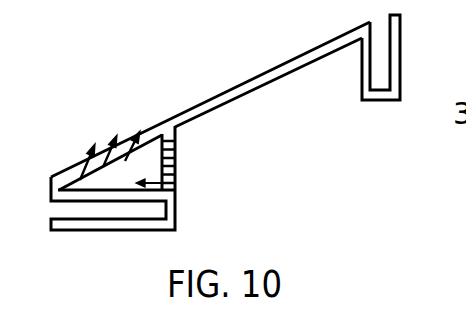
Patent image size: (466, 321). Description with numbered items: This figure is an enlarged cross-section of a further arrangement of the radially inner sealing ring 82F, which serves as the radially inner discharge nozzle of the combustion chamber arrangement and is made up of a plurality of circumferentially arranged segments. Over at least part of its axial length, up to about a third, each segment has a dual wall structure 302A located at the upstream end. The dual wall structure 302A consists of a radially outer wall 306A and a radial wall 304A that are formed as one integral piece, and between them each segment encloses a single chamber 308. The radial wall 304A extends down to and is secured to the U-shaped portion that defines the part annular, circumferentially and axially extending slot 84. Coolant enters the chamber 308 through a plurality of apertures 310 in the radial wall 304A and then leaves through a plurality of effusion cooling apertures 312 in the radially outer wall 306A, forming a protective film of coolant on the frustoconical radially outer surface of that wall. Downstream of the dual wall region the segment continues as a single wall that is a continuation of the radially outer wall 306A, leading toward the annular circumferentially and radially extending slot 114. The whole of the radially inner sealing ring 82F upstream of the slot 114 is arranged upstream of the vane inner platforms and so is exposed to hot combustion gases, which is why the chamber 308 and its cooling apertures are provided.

The annular circumferentially and radially extending slot 114 is at (381, 43).
The radially inner sealing ring 82F is at (322, 136).
The dual wall structure 302A is at (299, 184).
The part annular circumferentially and axially extending slot 84 is at (132, 212).
The effusion cooling apertures 312 is at (133, 137).
The apertures 310 is at (176, 142).
The radial wall 304A is at (178, 188).
The radially outer wall 306A is at (118, 138).
The chamber 308 is at (123, 182).